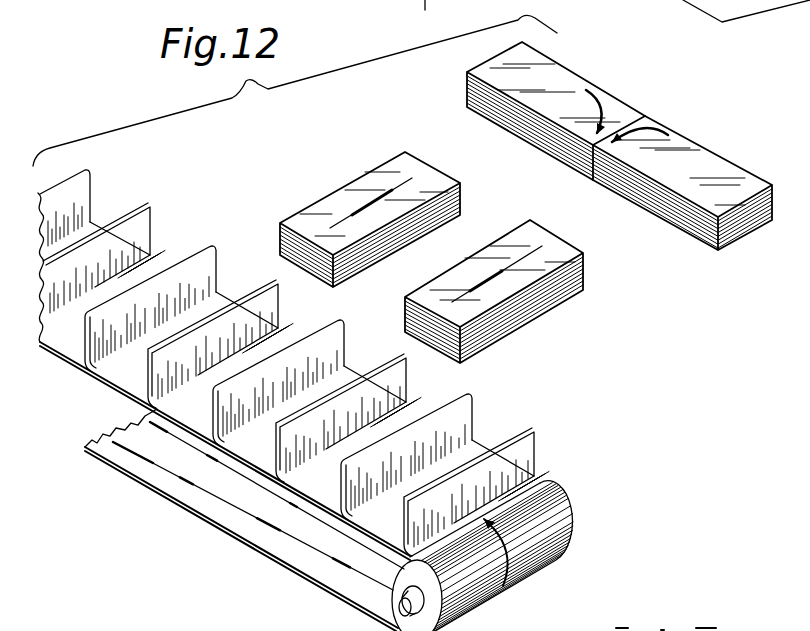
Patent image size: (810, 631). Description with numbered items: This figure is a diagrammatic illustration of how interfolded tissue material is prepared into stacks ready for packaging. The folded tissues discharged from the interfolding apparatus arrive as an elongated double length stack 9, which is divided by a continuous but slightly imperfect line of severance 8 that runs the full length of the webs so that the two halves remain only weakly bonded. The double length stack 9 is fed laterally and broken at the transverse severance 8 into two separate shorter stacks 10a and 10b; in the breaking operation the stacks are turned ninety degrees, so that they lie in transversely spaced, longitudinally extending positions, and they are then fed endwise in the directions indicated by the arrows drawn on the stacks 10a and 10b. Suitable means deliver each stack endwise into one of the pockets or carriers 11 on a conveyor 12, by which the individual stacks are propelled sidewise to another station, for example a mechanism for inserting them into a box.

The line of severance 8 is at (634, 118).
The double length stack 9 is at (704, 117).
The shorter stack 10a is at (382, 167).
The shorter stack 10b is at (628, 268).
The pocket or carrier 11 is at (213, 262).
The conveyor 12 is at (280, 335).